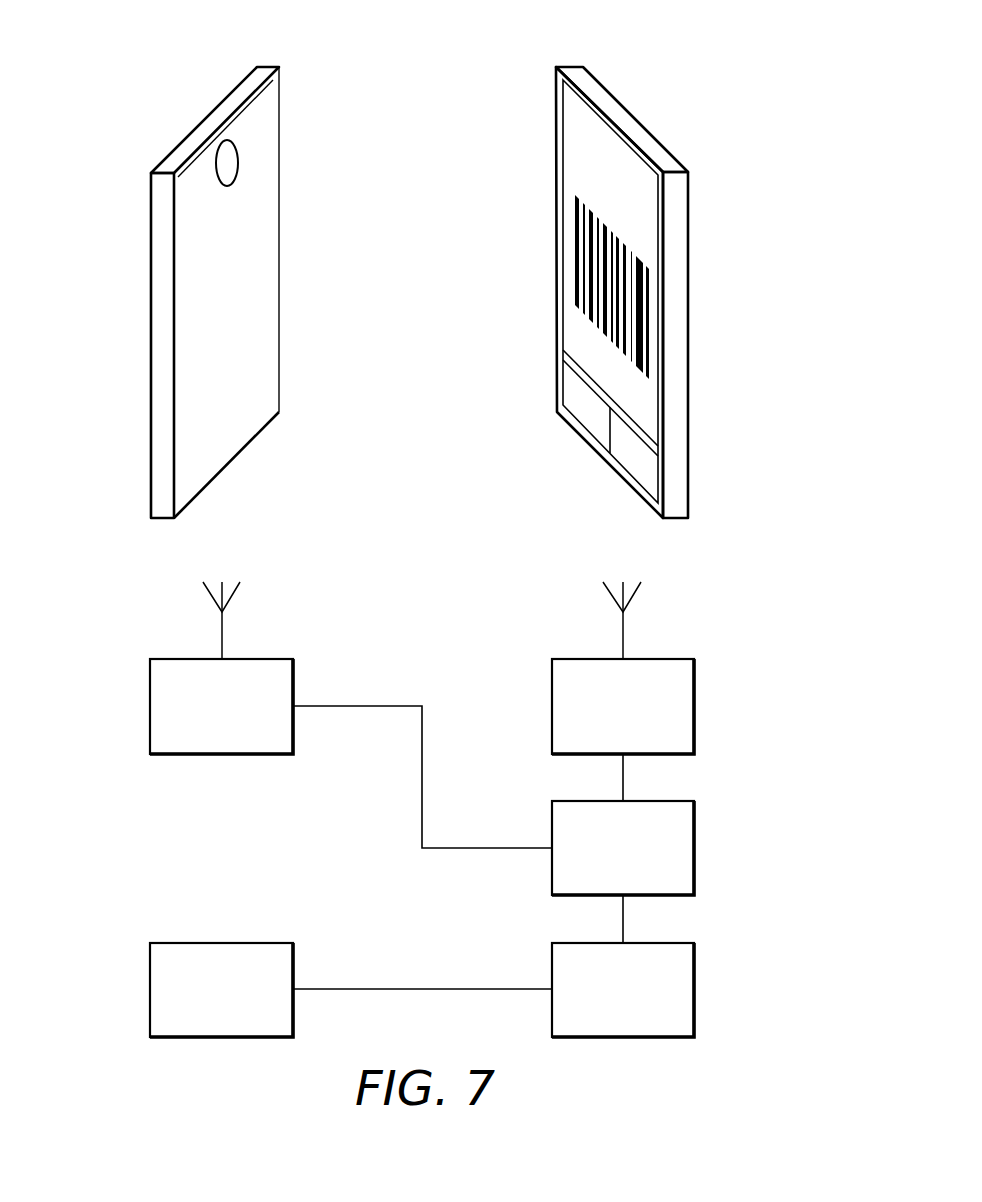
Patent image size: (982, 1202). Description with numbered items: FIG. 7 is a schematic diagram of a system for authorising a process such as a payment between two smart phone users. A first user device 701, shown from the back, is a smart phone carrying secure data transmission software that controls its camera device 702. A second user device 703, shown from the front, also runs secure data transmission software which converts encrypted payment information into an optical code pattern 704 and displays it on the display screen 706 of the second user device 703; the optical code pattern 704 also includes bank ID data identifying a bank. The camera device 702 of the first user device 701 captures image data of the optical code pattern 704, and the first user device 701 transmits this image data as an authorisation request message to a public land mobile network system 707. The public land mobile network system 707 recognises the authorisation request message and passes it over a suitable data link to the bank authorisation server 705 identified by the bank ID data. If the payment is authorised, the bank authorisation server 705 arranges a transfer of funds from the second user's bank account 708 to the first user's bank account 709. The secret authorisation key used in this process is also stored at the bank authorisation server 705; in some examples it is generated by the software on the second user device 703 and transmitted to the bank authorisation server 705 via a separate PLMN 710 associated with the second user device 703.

The first user device 701 is at (268, 65).
The camera device 702 is at (232, 163).
The second user device 703 is at (587, 263).
The optical code pattern 704 is at (576, 205).
The bank authorisation server 705 is at (694, 814).
The display screen 706 is at (576, 124).
The public land mobile network system 707 is at (150, 676).
The second user's bank account 708 is at (694, 956).
The first user's bank account 709 is at (150, 960).
The PLMN 710 is at (694, 672).